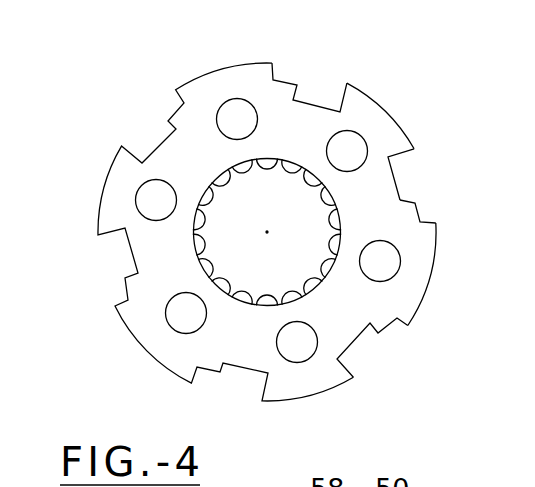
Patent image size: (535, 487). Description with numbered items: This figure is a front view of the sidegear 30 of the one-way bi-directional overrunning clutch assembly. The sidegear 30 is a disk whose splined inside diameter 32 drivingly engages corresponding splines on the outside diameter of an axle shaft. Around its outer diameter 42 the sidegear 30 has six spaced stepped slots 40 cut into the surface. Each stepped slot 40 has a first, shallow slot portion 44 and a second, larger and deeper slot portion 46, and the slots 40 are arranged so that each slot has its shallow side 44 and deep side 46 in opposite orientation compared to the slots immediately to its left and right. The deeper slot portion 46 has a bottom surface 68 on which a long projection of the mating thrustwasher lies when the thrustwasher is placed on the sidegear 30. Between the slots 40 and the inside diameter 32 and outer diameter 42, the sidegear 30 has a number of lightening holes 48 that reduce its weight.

The sidegear 30 is at (168, 78).
The splined inside diameter 32 is at (242, 298).
The stepped slot 40 is at (312, 100).
The outer diameter 42 is at (405, 120).
The shallow slot portion 44 is at (415, 207).
The deeper slot portion 46 is at (395, 185).
The lightening hole 48 is at (382, 268).
The bottom surface 68 is at (350, 347).